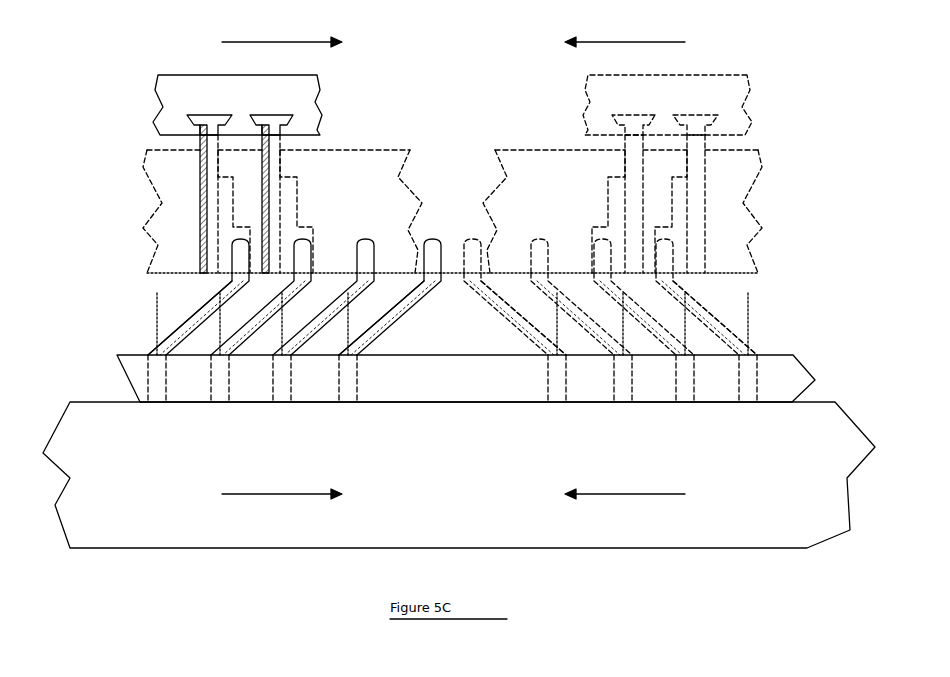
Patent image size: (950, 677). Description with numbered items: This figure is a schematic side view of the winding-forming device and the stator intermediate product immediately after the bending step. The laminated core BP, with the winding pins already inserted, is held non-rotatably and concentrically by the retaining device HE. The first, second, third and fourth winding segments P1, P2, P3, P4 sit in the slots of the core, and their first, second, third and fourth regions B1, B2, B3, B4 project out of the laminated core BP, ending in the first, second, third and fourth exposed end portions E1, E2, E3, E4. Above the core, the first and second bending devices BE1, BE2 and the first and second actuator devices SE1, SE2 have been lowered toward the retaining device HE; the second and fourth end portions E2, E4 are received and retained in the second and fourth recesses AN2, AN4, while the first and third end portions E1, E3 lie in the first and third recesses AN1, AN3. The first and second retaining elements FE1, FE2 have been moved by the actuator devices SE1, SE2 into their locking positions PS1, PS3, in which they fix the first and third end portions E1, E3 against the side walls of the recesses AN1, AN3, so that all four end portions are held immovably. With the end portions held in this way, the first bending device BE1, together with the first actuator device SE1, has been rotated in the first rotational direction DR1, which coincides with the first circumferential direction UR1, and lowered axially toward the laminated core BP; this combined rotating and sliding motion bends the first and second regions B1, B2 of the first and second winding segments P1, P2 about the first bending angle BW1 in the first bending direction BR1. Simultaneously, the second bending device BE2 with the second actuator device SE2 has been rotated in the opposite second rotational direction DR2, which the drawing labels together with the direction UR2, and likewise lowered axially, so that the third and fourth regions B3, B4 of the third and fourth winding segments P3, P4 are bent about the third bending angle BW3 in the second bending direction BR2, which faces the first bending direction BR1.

The first actuator device SE1 is at (180, 90).
The second actuator device SE2 is at (705, 90).
The first rotational direction DR1 is at (282, 33).
The first circumferential direction UR1 is at (282, 33).
The second rotational direction DR2 is at (625, 33).
The second unit region UR2 is at (625, 33).
The first retaining element FE1 is at (256, 207).
The locking position PS1 is at (256, 207).
The second retaining element FE2 is at (651, 209).
The locking position PS3 is at (651, 209).
The first bending device BE1 is at (388, 167).
The second bending device BE2 is at (515, 167).
The first recess AN1 is at (222, 208).
The second recess AN2 is at (365, 248).
The third recess AN3 is at (680, 205).
The fourth recess AN4 is at (480, 248).
The first exposed end portion E1 is at (238, 258).
The second exposed end portion E2 is at (438, 277).
The third exposed end portion E3 is at (667, 260).
The fourth exposed end portion E4 is at (468, 277).
The first region B1 is at (210, 298).
The second region B2 is at (400, 300).
The third region B3 is at (697, 298).
The fourth region B4 is at (510, 300).
The first bending angle BW1 is at (294, 314).
The third bending angle BW3 is at (610, 314).
The laminated core BP is at (120, 365).
The retaining device HE is at (90, 520).
The first winding segment P1 is at (157, 375).
The second winding segment P2 is at (282, 375).
The third winding segment P3 is at (688, 375).
The fourth winding segment P4 is at (560, 375).
The first bending direction BR1 is at (282, 503).
The second bending direction BR2 is at (625, 503).